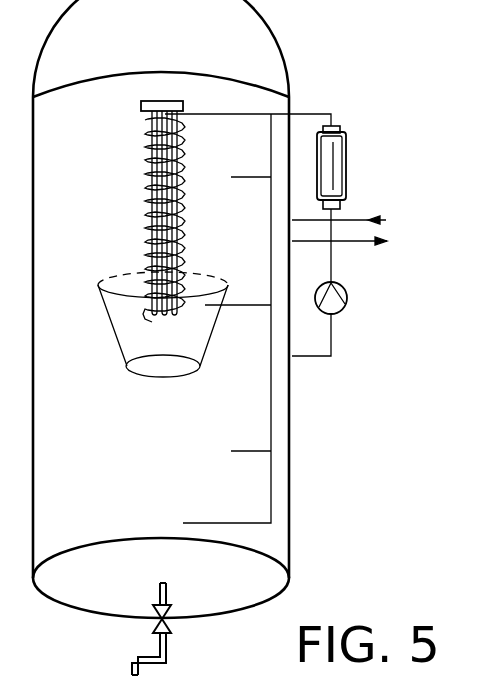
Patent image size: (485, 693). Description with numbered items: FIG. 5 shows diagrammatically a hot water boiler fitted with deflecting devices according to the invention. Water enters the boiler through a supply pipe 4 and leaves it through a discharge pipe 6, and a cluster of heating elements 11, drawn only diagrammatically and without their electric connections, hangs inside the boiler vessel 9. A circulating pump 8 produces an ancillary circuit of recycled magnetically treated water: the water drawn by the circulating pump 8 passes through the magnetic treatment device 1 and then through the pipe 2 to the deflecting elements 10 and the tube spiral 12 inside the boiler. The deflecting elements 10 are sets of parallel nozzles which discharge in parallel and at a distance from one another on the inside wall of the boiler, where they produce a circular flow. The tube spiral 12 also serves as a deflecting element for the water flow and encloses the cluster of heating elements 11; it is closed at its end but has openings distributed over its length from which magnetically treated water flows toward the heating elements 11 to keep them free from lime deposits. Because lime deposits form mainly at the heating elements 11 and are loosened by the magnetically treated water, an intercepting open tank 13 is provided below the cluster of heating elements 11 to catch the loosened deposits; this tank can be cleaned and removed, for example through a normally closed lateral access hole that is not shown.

The magnetic treatment device 1 is at (348, 172).
The pipe 2 is at (300, 114).
The supply pipe 4 is at (357, 222).
The discharge pipe 6 is at (358, 243).
The circulating pump 8 is at (345, 312).
The container / tank 9 is at (292, 492).
The deflecting elements 10 is at (250, 177).
The cluster of heating elements 11 is at (141, 106).
The tube spiral 12 is at (148, 185).
The intercepting open tank 13 is at (118, 341).